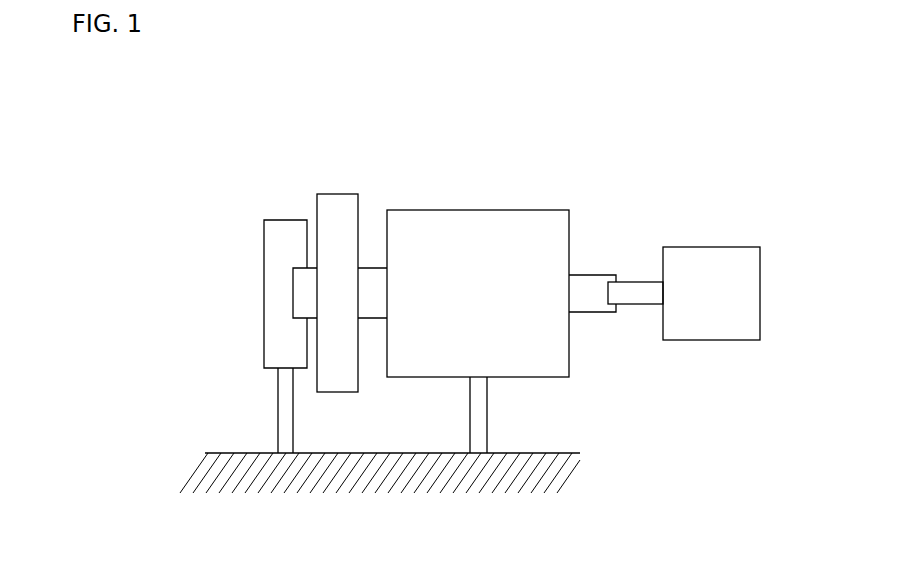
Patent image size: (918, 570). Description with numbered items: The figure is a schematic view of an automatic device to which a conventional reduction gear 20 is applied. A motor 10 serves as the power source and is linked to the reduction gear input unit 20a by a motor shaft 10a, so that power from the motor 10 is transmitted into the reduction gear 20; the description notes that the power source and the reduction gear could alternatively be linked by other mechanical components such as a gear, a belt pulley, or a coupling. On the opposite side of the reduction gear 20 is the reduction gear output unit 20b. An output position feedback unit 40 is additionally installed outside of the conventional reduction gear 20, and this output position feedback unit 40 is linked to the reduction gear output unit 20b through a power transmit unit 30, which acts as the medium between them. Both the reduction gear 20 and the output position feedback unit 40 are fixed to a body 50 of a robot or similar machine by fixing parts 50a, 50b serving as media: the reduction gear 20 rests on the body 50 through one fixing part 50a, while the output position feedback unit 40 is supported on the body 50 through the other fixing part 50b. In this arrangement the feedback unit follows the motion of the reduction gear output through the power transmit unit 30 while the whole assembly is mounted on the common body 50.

The motor 10 is at (722, 258).
The motor shaft 10a is at (641, 290).
The reduction gear 20 is at (508, 232).
The reduction gear input unit 20a is at (593, 287).
The reduction gear output unit 20b is at (368, 273).
The power transmit unit 30 is at (338, 207).
The output position feedback unit 40 is at (283, 228).
The body 50 is at (220, 468).
The fixing part 50a is at (480, 408).
The fixing part 50b is at (280, 401).